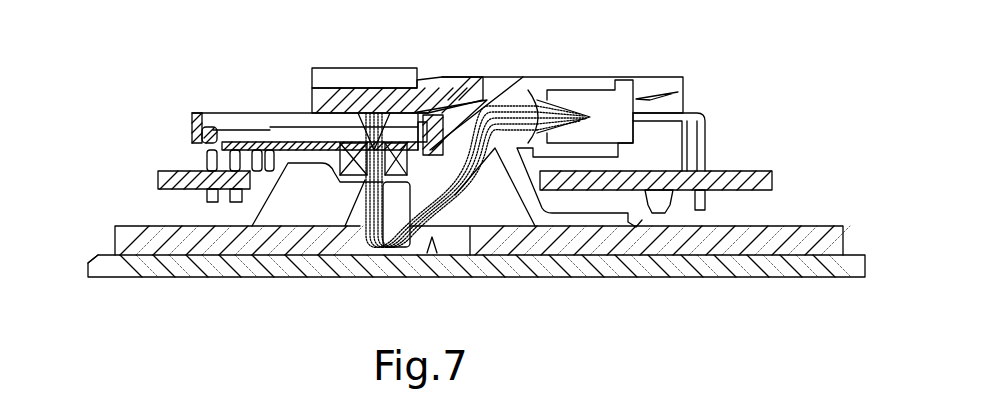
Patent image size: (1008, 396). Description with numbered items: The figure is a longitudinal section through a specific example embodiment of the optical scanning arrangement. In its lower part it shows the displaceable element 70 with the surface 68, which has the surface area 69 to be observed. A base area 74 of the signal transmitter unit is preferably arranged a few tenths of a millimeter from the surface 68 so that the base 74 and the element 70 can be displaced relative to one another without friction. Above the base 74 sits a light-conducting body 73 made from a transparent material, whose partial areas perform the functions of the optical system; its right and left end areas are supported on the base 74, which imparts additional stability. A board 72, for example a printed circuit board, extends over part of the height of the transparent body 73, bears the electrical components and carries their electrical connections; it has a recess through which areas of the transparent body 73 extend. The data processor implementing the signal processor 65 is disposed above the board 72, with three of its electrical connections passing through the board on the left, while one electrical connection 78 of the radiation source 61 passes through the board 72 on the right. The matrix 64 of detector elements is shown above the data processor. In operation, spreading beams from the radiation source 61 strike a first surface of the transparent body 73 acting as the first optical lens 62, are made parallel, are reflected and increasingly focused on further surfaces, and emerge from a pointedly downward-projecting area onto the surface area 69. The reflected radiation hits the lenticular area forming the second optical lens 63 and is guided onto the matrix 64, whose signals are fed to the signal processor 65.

The radiation source 61 is at (597, 88).
The first optical lens 62 is at (452, 206).
The second optical lens 63 is at (363, 190).
The matrix of detector elements 64 is at (360, 68).
The signal processor 65 is at (230, 113).
The surface 68 is at (100, 255).
The surface area to be observed 69 is at (433, 243).
The displaceable element 70 is at (86, 275).
The board 72 is at (165, 170).
The light-conducting body 73 is at (157, 212).
The base area 74 is at (110, 228).
The electrical connection 78 is at (700, 113).